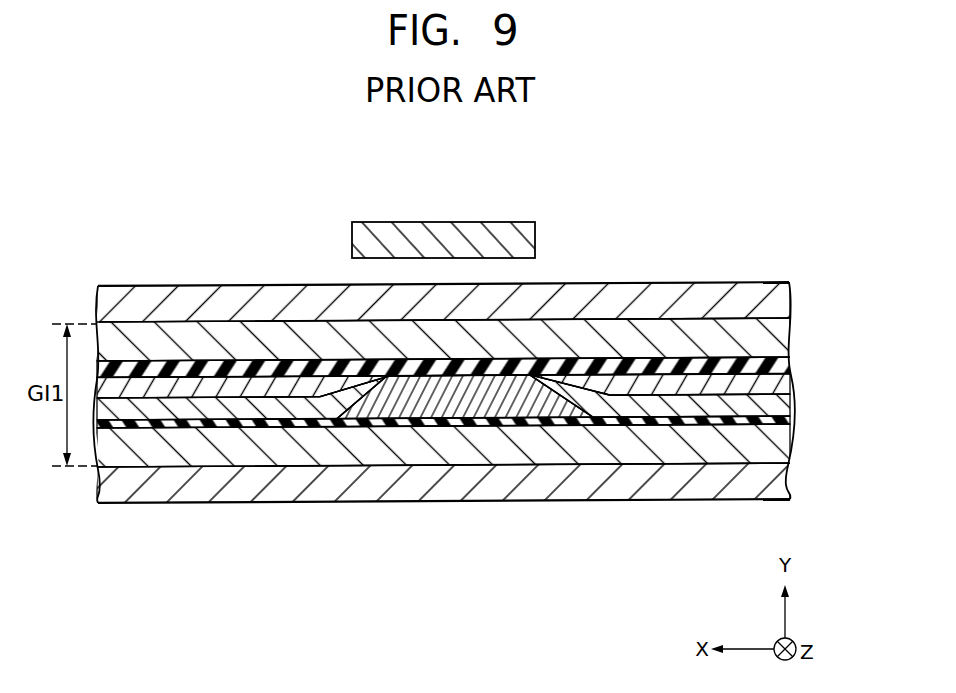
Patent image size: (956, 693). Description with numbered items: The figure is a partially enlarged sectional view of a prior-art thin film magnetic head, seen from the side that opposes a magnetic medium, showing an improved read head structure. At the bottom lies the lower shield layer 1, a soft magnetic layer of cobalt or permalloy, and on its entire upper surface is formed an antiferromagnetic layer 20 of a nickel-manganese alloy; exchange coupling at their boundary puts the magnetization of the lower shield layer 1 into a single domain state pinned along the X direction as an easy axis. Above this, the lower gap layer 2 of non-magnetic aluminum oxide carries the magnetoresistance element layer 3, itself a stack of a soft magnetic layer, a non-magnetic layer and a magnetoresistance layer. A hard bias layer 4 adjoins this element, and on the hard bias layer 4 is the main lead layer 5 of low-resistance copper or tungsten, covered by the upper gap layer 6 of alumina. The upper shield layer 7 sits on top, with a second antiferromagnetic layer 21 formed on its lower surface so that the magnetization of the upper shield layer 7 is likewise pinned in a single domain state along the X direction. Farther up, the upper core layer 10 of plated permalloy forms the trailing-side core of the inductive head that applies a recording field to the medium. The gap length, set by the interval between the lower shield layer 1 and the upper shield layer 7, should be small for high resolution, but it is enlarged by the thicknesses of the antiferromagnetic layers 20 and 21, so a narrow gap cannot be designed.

The lower shield layer 1 is at (782, 487).
The lower gap layer 2 is at (782, 423).
The magnetoresistance element layer 3 is at (488, 396).
The hard bias layer 4 is at (782, 401).
The main lead layer 5 is at (782, 381).
The upper gap layer 6 is at (784, 357).
The upper shield layer 7 is at (784, 298).
The upper core layer 10 is at (440, 238).
The antiferromagnetic layer 20 is at (782, 447).
The antiferromagnetic layer 21 is at (784, 333).